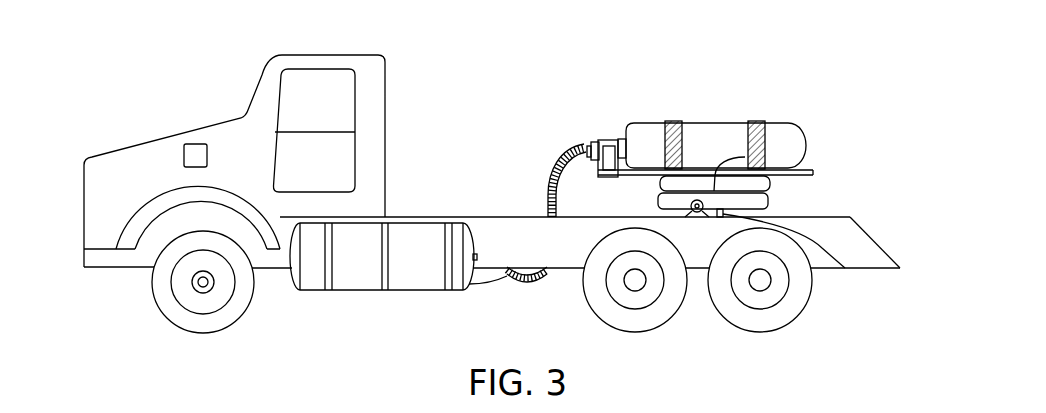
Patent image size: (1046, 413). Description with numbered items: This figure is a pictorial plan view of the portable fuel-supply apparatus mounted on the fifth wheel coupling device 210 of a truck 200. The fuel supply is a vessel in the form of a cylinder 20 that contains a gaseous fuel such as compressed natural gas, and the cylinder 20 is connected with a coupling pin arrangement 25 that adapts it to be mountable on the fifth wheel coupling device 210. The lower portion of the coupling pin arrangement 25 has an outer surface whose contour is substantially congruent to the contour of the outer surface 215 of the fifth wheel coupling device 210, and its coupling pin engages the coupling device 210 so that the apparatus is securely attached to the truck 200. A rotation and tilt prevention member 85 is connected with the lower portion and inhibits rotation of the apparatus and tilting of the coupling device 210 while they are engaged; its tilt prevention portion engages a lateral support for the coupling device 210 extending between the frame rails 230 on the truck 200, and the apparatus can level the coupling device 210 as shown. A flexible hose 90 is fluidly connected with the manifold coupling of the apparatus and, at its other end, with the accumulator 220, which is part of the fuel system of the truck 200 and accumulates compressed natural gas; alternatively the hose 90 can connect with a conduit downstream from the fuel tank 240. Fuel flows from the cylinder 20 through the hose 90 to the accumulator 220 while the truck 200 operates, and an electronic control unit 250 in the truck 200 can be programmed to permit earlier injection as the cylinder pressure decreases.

The truck 200 is at (387, 80).
The electronic control unit 250 is at (182, 155).
The fuel tank 240 is at (405, 291).
The accumulator 220 is at (475, 285).
The flexible hose 90 is at (568, 146).
The cylinder 20 is at (782, 122).
The outer surface 215 is at (745, 157).
The coupling pin arrangement 25 is at (776, 182).
The fifth wheel coupling device 210 is at (766, 200).
The frame rails 230 is at (867, 235).
The rotation and tilt prevention member 85 is at (845, 268).